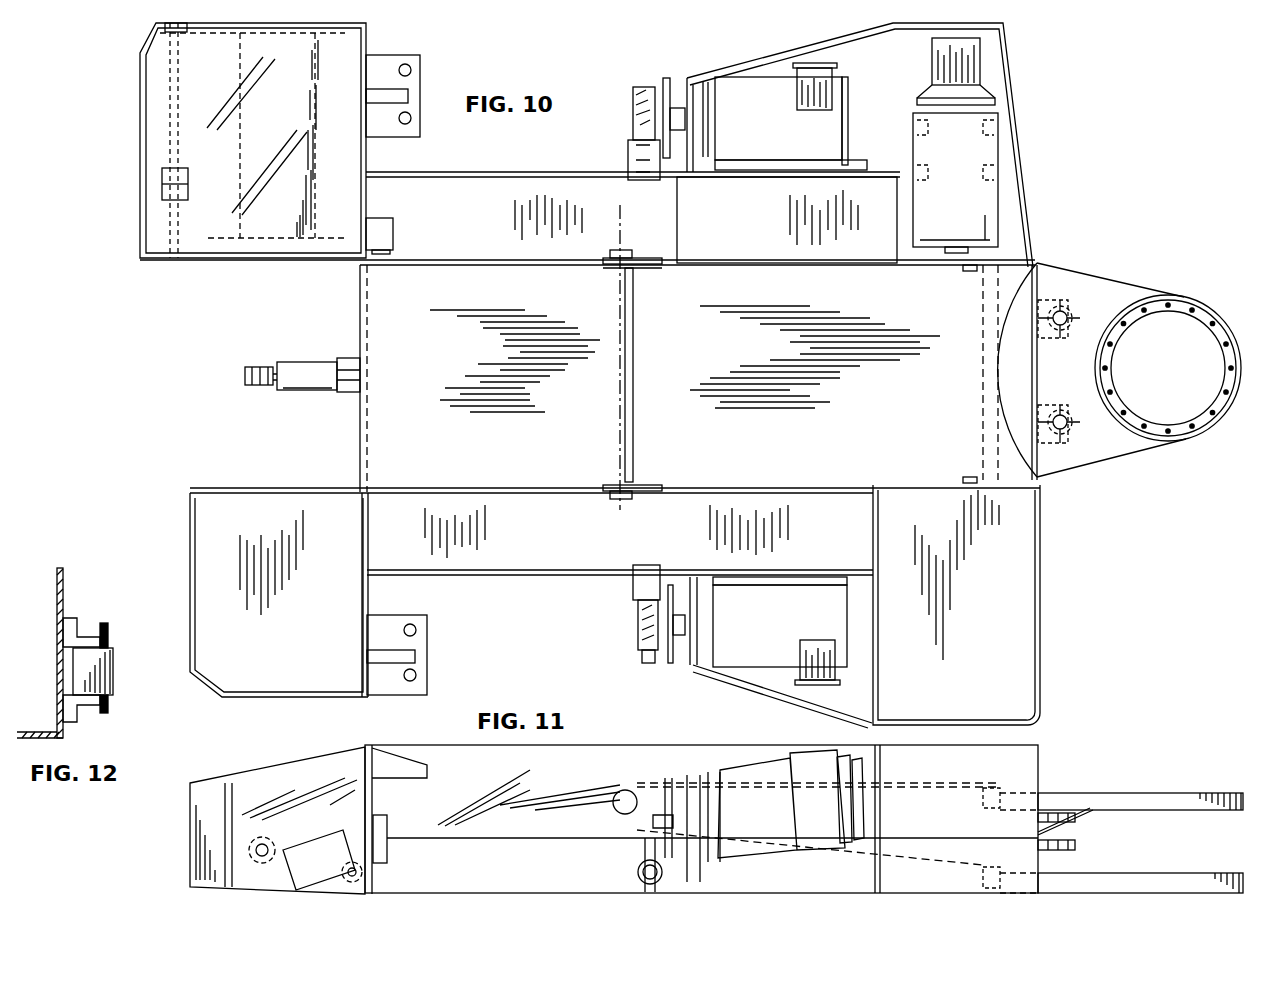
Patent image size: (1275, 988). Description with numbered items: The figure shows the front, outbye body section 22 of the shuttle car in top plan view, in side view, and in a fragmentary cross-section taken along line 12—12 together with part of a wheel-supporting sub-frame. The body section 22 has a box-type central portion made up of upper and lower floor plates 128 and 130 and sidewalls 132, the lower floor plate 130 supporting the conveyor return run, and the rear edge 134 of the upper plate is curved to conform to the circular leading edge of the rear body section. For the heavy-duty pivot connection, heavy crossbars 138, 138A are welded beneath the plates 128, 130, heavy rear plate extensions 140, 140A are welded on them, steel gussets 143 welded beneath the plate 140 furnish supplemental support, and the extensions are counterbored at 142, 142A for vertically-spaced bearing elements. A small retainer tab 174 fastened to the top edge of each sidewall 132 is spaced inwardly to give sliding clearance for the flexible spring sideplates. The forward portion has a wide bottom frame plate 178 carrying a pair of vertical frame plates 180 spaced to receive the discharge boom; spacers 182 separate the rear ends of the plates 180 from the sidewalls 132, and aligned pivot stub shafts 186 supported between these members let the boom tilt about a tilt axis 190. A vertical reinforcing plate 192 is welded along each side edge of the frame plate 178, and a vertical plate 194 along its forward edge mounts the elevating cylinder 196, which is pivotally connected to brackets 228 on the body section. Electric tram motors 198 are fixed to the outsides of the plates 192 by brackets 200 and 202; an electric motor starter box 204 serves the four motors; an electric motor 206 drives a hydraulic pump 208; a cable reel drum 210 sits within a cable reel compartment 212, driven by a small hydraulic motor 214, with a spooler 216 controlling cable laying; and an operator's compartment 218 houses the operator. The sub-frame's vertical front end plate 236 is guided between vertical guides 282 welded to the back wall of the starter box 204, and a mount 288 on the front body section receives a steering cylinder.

In FIG. 10, the front, outbye body section 22 is at (1022, 138).
In FIG. 11, the front, outbye body section 22 is at (1048, 744).
In FIG. 11, the section line 12— 12 is at (342, 803).
In FIG. 10, the upper floor plate 128 is at (888, 424).
In FIG. 11, the upper floor plate 128 is at (913, 783).
In FIG. 11, the lower floor plate 130 is at (890, 855).
In FIG. 10, the sidewalls 132 is at (763, 265).
In FIG. 10, the rear edge 134 is at (1020, 300).
In FIG. 11, the crossbar 138 is at (983, 796).
In FIG. 11, the crossbar 138A is at (983, 878).
In FIG. 10, the rear plate extension 140 is at (1103, 307).
In FIG. 11, the rear plate extension 140 is at (1165, 793).
In FIG. 11, the rear plate extension 140A is at (1195, 880).
In FIG. 10, the counterbore 142 is at (1198, 316).
In FIG. 11, the counterbore 142 is at (1112, 806).
In FIG. 11, the counterbore 142A is at (1105, 877).
In FIG. 11, the steel gussets 143 is at (1078, 818).
In FIG. 10, the retainer tab 174 is at (965, 272).
In FIG. 10, the bottom frame plate 178 is at (498, 218).
In FIG. 11, the bottom frame plate 178 is at (455, 895).
In FIG. 10, the vertical frame plates 180 is at (420, 493).
In FIG. 10, the spacers 182 is at (658, 244).
In FIG. 10, the pivot stub shafts 186 is at (622, 270).
In FIG. 10, the tilt axis 190 is at (620, 213).
In FIG. 10, the vertical reinforcing plate 192 is at (490, 172).
In FIG. 11, the vertical reinforcing plate 192 is at (549, 880).
In FIG. 10, the vertical plate 194 is at (358, 478).
In FIG. 10, the elevating cylinder 196 is at (305, 362).
In FIG. 10, the electric tram motors 198 is at (770, 116).
In FIG. 10, the bracket 200 is at (690, 82).
In FIG. 10, the bracket 202 is at (848, 132).
In FIG. 10, the electric motor starter box 204 is at (281, 550).
In FIG. 12, the electric motor starter box 204 is at (64, 592).
In FIG. 10, the electric motor 206 is at (955, 169).
In FIG. 10, the hydraulic pump 208 is at (965, 60).
In FIG. 10, the cable reel drum 210 is at (240, 103).
In FIG. 10, the cable reel compartment 212 is at (138, 100).
In FIG. 10, the hydraulic motor 214 is at (395, 235).
In FIG. 10, the spooler 216 is at (162, 183).
In FIG. 10, the operator's compartment 218 is at (1008, 655).
In FIG. 11, the operator's compartment 218 is at (977, 838).
In FIG. 10, the brackets 228 is at (348, 358).
In FIG. 12, the vertical front end plate 236 is at (110, 640).
In FIG. 11, the vertical guides 282 is at (390, 848).
In FIG. 12, the vertical guides 282 is at (78, 632).
In FIG. 10, the mount 288 is at (1068, 430).
In FIG. 11, the mount 288 is at (1070, 848).